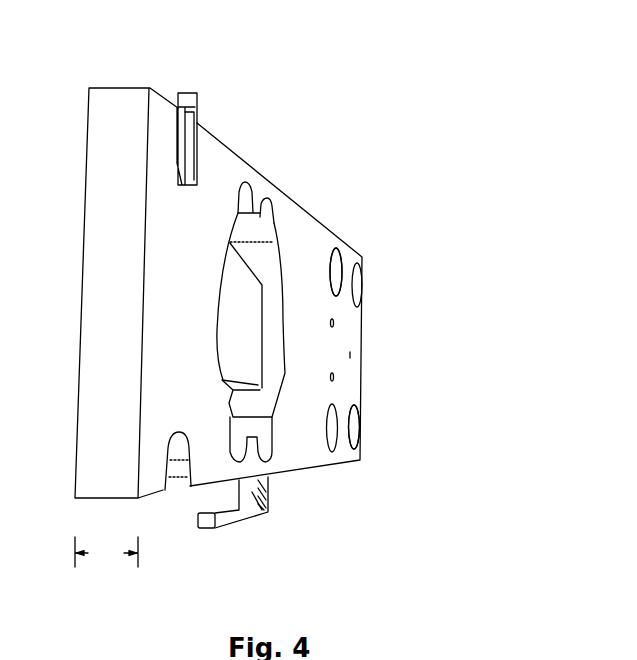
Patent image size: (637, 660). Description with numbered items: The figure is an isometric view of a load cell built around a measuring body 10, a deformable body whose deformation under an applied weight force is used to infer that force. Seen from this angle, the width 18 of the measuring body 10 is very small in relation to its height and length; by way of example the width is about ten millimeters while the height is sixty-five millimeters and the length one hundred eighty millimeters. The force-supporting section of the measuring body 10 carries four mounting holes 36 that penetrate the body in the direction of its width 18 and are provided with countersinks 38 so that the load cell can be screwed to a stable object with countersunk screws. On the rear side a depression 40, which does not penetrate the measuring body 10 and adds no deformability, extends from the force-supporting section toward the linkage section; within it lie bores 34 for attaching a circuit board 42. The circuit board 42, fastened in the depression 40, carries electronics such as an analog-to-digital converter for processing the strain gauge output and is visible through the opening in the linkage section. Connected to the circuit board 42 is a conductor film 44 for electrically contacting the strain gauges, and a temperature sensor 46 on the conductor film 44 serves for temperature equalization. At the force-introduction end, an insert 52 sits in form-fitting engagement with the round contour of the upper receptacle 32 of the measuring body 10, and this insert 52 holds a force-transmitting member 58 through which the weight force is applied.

The measuring body 10 is at (295, 237).
The width 18 is at (106, 552).
The receptacle 32 is at (158, 83).
The bores 34 is at (334, 323).
The mounting holes 36 is at (340, 253).
The countersinks 38 is at (345, 348).
The depression 40 is at (225, 268).
The circuit board 42 is at (245, 333).
The conductor film 44 is at (260, 517).
The temperature sensor 46 is at (212, 525).
The insert 52 is at (197, 108).
The force-transmitting member 58 is at (198, 150).